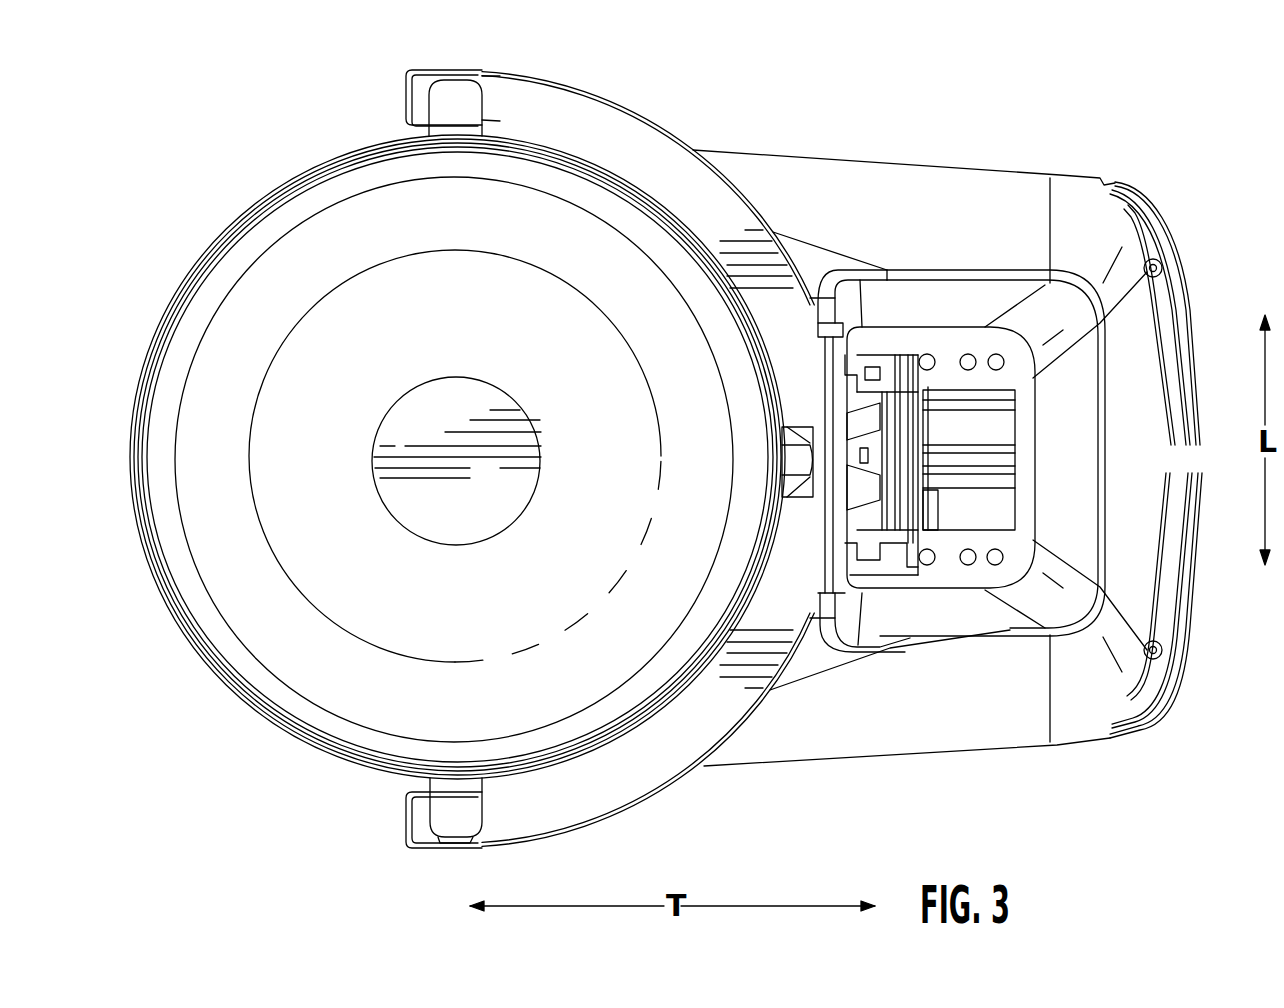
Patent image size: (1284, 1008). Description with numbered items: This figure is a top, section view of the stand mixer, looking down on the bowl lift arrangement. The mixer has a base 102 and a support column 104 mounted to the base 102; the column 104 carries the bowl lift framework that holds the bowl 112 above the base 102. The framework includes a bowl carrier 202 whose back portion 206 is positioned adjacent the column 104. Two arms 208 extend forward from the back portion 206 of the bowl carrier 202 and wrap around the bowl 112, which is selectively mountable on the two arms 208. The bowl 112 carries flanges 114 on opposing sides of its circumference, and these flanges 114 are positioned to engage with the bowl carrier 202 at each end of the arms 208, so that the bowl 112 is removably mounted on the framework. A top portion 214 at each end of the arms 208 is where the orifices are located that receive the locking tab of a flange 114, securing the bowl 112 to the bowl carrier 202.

The base 102 is at (820, 185).
The support column 104 is at (987, 305).
The bowl 112 is at (228, 268).
The flanges 114 is at (455, 108).
The bowl carrier 202 is at (748, 157).
The back portion 206 is at (833, 455).
The arms 208 is at (553, 75).
The top portion 214 is at (493, 94).